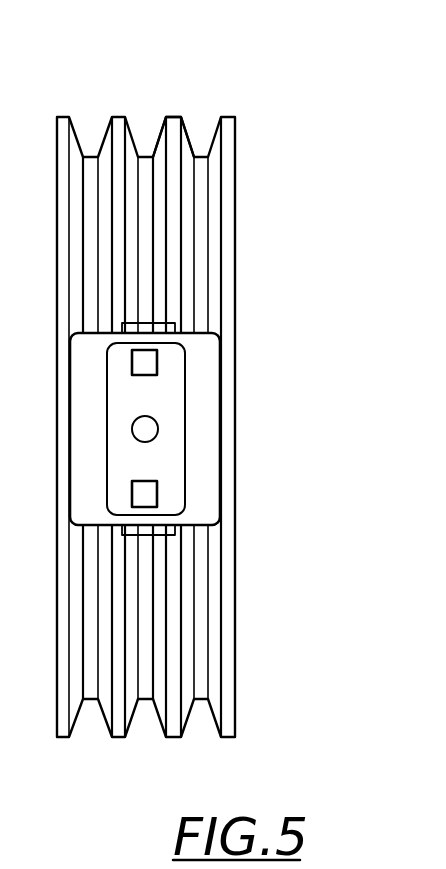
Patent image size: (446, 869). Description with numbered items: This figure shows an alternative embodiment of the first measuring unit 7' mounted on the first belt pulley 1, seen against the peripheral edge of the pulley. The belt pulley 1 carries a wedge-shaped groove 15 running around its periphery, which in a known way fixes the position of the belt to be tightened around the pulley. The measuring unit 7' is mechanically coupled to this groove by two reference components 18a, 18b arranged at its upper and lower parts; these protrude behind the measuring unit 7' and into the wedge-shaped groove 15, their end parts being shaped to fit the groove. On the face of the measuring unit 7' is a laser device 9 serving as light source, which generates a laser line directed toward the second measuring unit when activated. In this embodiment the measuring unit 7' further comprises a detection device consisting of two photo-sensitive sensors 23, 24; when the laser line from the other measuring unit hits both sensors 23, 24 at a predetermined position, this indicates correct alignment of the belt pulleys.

The first belt pulley 1 is at (237, 152).
The wedge-shaped groove 15 is at (160, 138).
The reference component 18a is at (152, 325).
The reference component 18b is at (145, 535).
The first measuring unit 7' is at (196, 429).
The photo-sensitive sensor 23 is at (150, 362).
The laser device 9 is at (152, 430).
The photo-sensitive sensor 24 is at (150, 497).